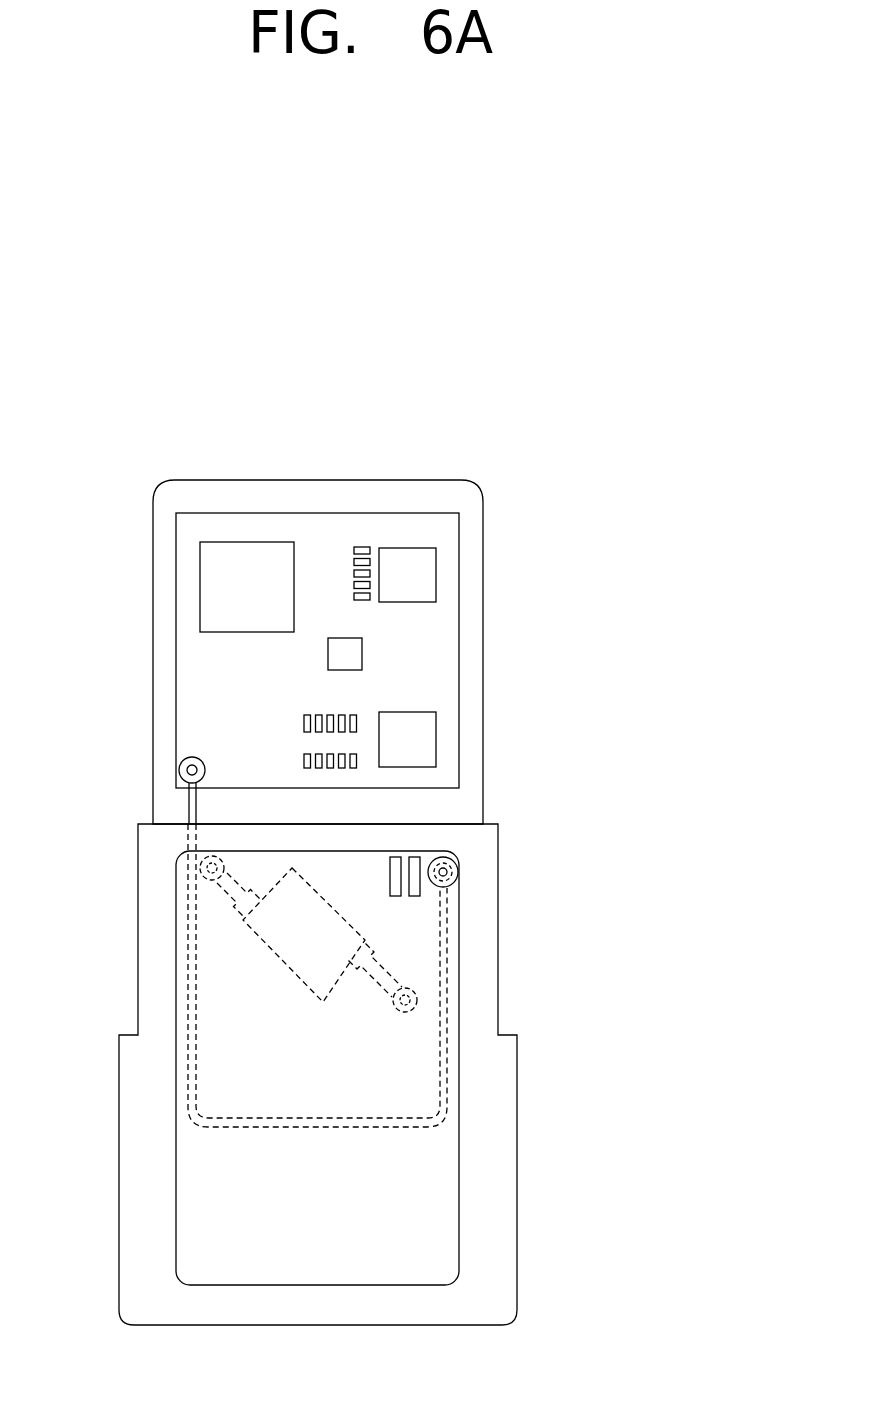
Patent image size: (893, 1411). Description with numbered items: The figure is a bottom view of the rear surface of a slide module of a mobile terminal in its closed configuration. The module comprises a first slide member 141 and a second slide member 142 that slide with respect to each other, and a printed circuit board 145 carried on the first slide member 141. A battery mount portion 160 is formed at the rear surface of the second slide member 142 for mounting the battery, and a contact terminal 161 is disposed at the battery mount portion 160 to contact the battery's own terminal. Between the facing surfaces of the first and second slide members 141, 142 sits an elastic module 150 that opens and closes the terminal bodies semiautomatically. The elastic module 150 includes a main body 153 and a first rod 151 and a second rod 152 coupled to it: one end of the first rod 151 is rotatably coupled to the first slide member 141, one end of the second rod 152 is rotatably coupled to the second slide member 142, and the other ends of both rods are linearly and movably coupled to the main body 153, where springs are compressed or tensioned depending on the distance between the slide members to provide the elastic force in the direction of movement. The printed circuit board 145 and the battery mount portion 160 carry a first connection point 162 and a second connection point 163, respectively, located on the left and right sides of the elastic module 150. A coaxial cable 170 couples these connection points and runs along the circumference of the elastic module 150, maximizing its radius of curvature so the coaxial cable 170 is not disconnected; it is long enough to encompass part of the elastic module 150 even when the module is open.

The first slide member 141 is at (162, 672).
The second slide member 142 is at (153, 968).
The printed circuit board 145 is at (187, 592).
The elastic module 150 is at (363, 923).
The first rod 151 is at (235, 888).
The second rod 152 is at (387, 978).
The main body 153 is at (358, 945).
The battery mount portion 160 is at (190, 1200).
The contact terminal 161 is at (415, 858).
The first connection point 162 is at (179, 770).
The second connection point 163 is at (455, 875).
The coaxial cable 170 is at (190, 805).